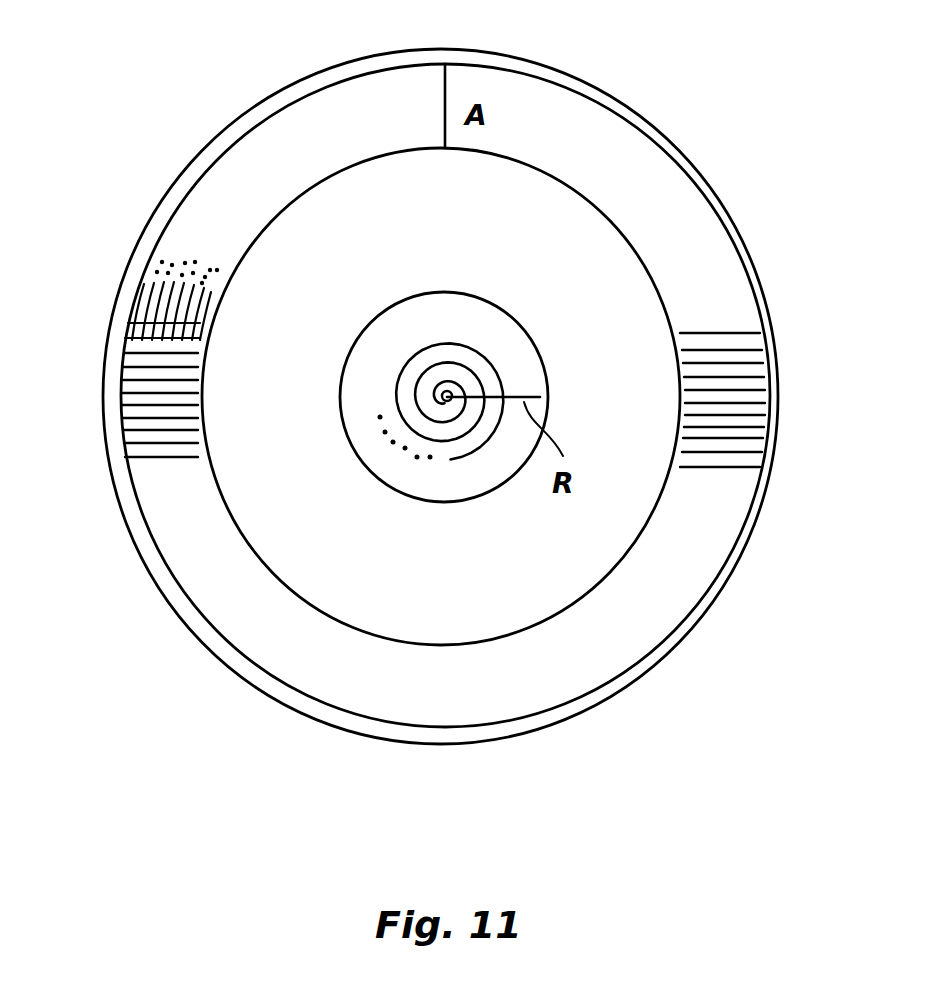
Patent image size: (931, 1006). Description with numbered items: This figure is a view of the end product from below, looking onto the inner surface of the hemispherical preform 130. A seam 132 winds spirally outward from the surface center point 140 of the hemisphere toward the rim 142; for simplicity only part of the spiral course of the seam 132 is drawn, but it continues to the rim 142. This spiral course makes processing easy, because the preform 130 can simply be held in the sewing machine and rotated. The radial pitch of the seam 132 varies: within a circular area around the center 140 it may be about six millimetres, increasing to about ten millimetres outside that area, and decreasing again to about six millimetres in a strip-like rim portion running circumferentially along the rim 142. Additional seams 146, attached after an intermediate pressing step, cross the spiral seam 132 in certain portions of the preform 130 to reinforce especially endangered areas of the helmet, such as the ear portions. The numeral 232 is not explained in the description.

The preform 130 is at (268, 72).
The seam 132 is at (474, 341).
The center 140 is at (442, 398).
The rim 142 is at (673, 637).
The additional seams 146 is at (140, 455).
The alternate indicator markings 232 is at (142, 295).